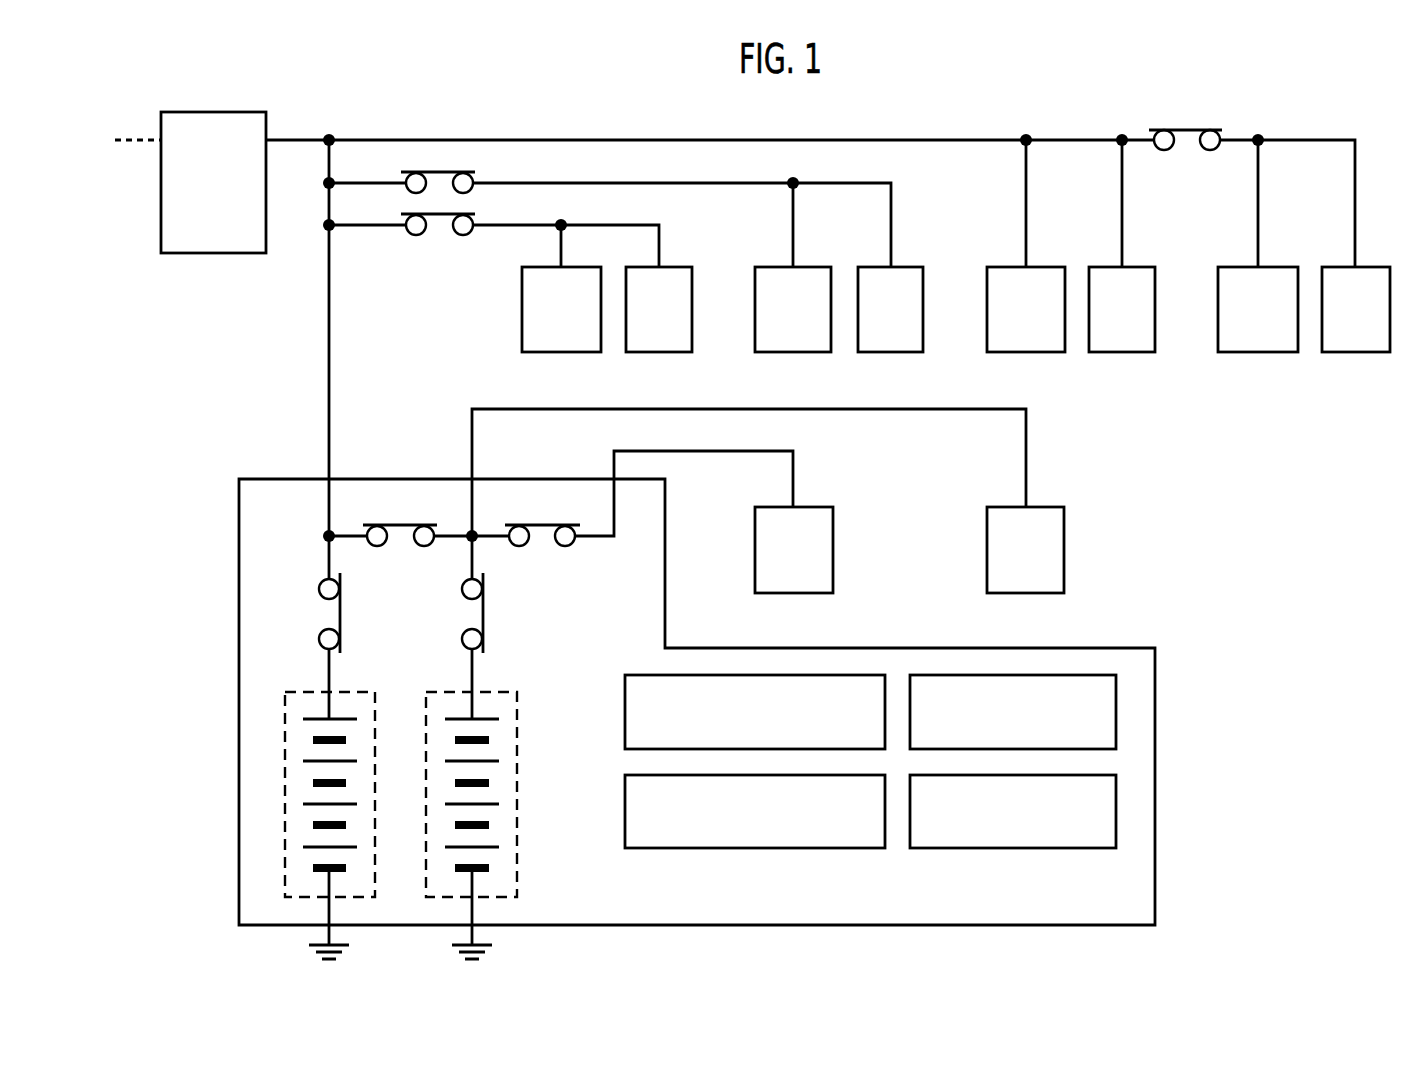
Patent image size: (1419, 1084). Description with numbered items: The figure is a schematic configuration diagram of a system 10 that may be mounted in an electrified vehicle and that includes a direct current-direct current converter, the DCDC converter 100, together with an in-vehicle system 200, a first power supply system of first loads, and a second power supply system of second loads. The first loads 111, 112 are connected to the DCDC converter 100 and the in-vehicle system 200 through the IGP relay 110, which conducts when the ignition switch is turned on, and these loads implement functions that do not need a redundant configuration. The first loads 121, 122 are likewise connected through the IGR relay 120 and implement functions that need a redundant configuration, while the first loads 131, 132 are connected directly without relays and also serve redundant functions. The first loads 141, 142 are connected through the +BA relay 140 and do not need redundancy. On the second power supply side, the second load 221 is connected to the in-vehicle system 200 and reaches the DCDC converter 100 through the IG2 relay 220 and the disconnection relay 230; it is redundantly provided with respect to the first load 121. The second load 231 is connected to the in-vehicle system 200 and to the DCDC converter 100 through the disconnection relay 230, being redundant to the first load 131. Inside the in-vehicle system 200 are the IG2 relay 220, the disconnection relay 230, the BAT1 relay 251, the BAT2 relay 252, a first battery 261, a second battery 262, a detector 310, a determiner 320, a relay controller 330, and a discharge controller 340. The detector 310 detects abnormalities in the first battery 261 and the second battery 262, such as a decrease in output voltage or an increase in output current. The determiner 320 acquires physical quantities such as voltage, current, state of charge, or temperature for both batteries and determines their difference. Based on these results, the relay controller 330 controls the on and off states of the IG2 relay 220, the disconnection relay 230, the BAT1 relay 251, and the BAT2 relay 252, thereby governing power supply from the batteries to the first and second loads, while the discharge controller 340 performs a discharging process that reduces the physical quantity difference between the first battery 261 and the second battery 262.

The system 10 is at (1288, 499).
The DCDC converter 100 is at (234, 215).
The IGP relay 110 is at (485, 215).
The first load 111 is at (583, 329).
The first load 112 is at (680, 329).
The IGR relay 120 is at (485, 173).
The first load 121 is at (814, 329).
The first load 122 is at (911, 329).
The first load 131 is at (1047, 329).
The first load 132 is at (1143, 329).
The +BA relay 140 is at (1232, 133).
The first load 141 is at (1279, 329).
The first load 142 is at (1377, 329).
The in-vehicle system 200 is at (979, 902).
The IG2 relay 220 is at (526, 518).
The second load 221 is at (816, 567).
The disconnection relay 230 is at (383, 518).
The second load 231 is at (1048, 567).
The BAT1 relay 251 is at (348, 613).
The BAT2 relay 252 is at (491, 613).
The first battery 261 is at (350, 690).
The second battery 262 is at (493, 690).
The detector 310 is at (1108, 730).
The determiner 320 is at (1108, 830).
The relay controller 330 is at (875, 730).
The discharge controller 340 is at (875, 830).